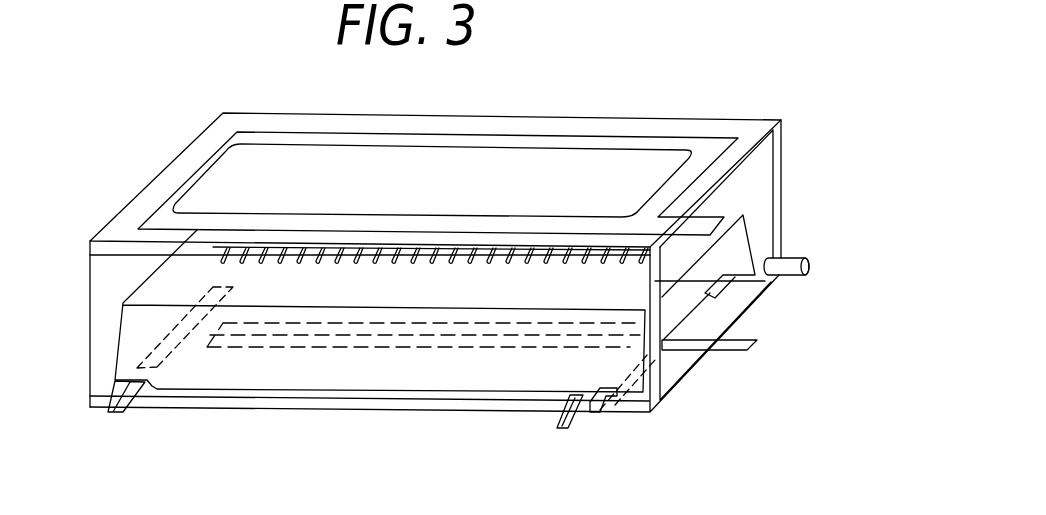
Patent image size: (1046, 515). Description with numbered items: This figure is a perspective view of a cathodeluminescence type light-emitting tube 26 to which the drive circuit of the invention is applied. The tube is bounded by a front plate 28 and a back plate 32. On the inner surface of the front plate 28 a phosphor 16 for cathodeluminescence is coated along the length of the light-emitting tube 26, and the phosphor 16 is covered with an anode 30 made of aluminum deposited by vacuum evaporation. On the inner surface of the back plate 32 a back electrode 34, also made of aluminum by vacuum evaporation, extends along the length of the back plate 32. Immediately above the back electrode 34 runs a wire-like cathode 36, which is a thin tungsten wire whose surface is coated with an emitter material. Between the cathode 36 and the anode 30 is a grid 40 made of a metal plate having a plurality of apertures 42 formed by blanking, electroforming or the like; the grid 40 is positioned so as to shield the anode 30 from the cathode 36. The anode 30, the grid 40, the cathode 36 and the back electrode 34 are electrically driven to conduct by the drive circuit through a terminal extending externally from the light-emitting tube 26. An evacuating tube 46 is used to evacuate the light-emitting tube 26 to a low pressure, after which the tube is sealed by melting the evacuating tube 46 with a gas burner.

The phosphor 16 is at (618, 160).
The light-emitting tube 26 is at (612, 503).
The front plate 28 is at (786, 122).
The anode 30 is at (722, 226).
The back plate 32 is at (683, 378).
The back electrode 34 is at (738, 352).
The cathode 36 is at (517, 333).
The grid 40 is at (752, 237).
The apertures 42 is at (497, 262).
The evacuating tube 46 is at (793, 277).